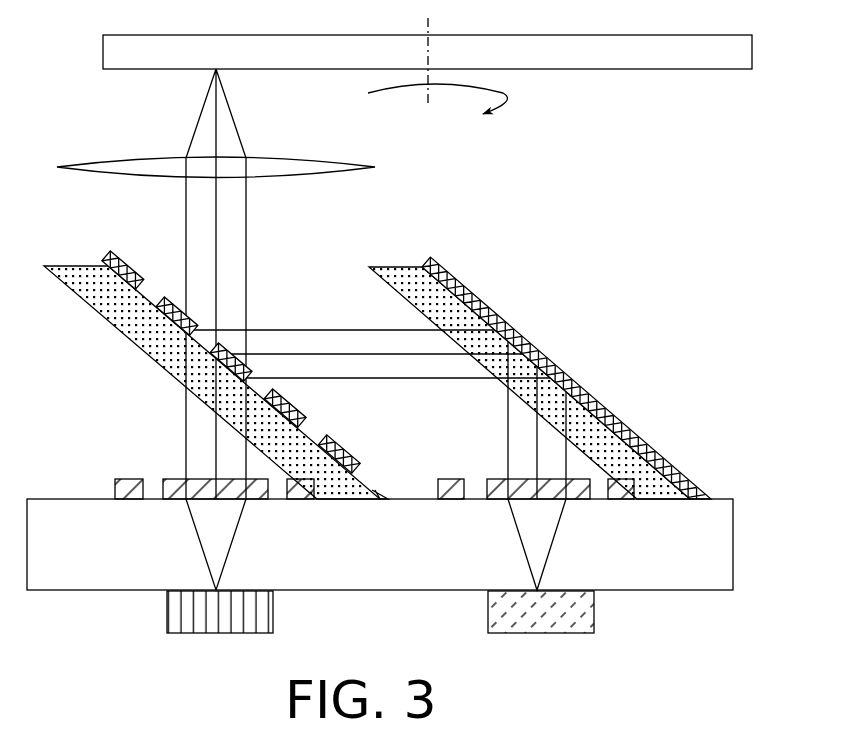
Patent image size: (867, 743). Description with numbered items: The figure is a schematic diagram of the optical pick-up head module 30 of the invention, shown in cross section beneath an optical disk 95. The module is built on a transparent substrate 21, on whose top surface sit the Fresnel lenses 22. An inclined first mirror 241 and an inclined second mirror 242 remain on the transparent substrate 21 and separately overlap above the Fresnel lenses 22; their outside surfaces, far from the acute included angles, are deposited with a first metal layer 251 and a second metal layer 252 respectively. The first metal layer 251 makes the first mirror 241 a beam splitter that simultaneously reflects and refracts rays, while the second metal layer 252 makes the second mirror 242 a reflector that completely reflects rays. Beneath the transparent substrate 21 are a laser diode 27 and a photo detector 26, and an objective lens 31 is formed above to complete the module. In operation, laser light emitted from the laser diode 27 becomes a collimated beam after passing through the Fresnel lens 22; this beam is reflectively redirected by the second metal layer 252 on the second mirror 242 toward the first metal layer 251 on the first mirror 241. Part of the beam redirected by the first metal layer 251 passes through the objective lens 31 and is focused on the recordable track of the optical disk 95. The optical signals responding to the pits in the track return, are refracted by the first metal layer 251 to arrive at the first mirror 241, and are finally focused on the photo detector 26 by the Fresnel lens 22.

The optical disk 95 is at (707, 66).
The optical pick-up head module 30 is at (678, 253).
The objective lens 31 is at (313, 167).
The first mirror 241 is at (90, 290).
The first metal layer 251 is at (119, 265).
The second mirror 242 is at (400, 267).
The second metal layer 252 is at (479, 305).
The transparent substrate 21 is at (723, 563).
The Fresnel lenses 22 is at (170, 480).
The photo detector 26 is at (200, 617).
The laser diode 27 is at (530, 620).